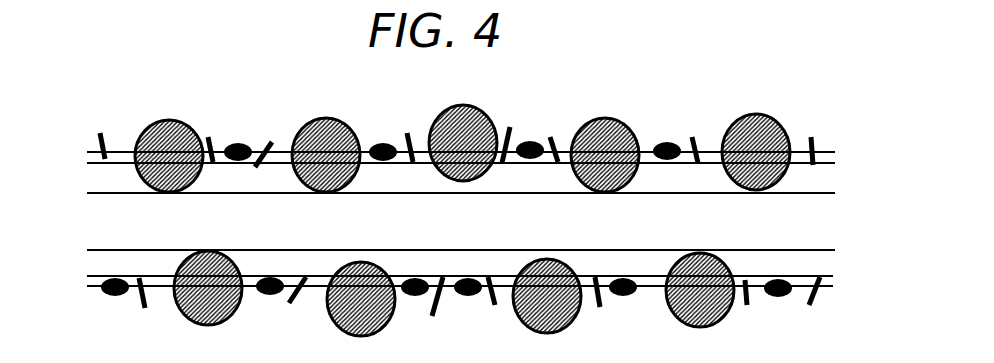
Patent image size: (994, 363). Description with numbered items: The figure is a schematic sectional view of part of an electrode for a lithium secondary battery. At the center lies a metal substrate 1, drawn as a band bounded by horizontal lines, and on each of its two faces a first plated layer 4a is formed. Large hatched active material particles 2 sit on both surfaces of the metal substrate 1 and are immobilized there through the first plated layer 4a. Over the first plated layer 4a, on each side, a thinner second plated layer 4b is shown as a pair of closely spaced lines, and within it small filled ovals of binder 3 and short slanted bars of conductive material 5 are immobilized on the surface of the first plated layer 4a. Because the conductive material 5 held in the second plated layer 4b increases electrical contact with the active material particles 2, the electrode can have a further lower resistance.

The metal substrate 1 is at (97, 222).
The active material particles 2 is at (173, 302).
The binder 3 is at (104, 295).
The first plated layer 4a is at (834, 178).
The second plated layer 4b is at (838, 157).
The conductive material 5 is at (292, 298).